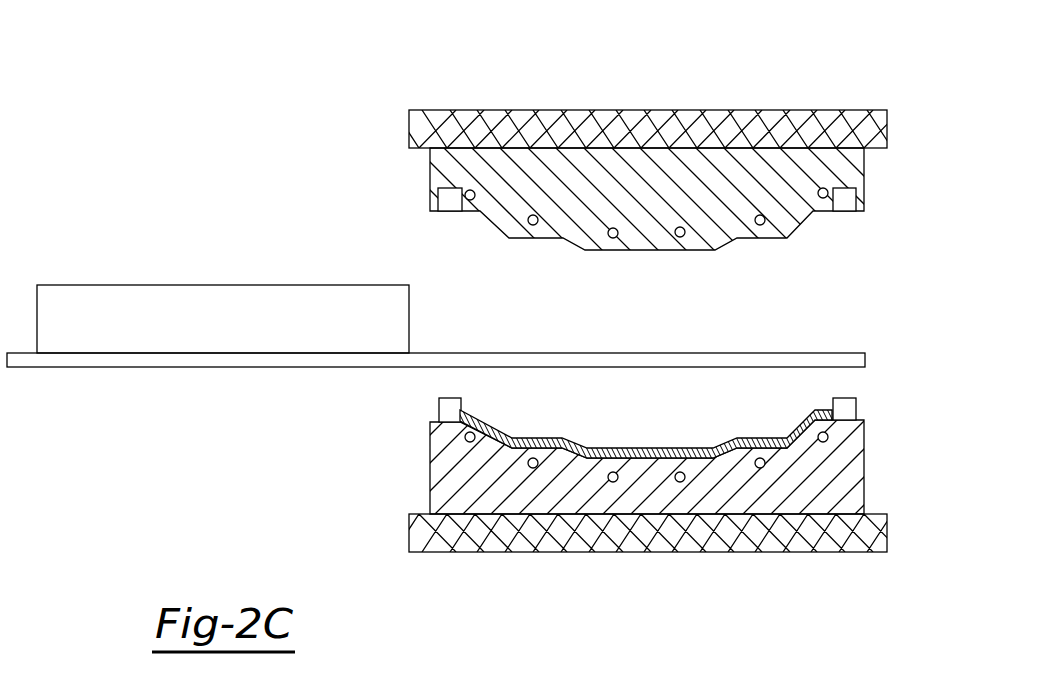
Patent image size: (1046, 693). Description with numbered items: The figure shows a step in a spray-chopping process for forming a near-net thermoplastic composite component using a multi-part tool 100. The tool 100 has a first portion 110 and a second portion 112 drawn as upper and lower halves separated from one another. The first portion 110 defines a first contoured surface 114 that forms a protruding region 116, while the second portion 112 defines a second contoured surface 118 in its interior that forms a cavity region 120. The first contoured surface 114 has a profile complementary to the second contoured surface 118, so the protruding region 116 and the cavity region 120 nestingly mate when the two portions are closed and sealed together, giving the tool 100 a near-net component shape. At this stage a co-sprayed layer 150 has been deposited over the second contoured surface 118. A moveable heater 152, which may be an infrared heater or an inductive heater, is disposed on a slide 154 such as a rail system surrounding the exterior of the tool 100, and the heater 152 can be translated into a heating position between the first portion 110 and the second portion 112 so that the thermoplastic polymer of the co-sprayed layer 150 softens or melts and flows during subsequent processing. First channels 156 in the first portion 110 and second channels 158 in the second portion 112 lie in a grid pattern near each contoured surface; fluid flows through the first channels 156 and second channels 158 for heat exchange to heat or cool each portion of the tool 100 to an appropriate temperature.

The tool 100 is at (798, 76).
The first portion 110 is at (410, 138).
The second portion 112 is at (410, 525).
The first contoured surface 114 is at (772, 238).
The protruding region 116 is at (594, 265).
The second contoured surface 118 is at (527, 445).
The cavity region 120 is at (621, 438).
The co-sprayed layer 150 is at (680, 447).
The moveable heater 152 is at (162, 285).
The slide 154 is at (610, 352).
The first channels 156 is at (828, 188).
The second channels 158 is at (827, 440).